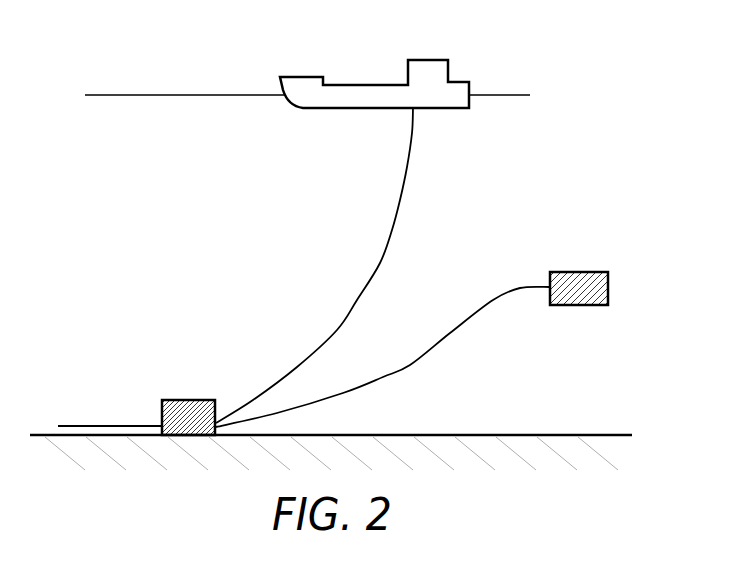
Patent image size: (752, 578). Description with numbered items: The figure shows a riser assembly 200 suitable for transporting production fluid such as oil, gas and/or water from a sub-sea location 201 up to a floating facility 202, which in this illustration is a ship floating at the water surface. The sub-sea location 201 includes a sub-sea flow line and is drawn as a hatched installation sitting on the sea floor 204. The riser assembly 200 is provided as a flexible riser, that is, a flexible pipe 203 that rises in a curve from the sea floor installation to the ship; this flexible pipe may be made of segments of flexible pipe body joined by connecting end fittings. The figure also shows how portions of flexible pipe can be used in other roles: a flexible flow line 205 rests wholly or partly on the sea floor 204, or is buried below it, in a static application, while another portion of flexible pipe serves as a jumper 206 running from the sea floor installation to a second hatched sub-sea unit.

The riser assembly 200 is at (518, 187).
The sub-sea location 201 is at (186, 400).
The floating facility 202 is at (300, 76).
The flexible pipe 203 is at (390, 227).
The sea floor 204 is at (555, 435).
The flexible flow line 205 is at (97, 426).
The jumper 206 is at (493, 303).